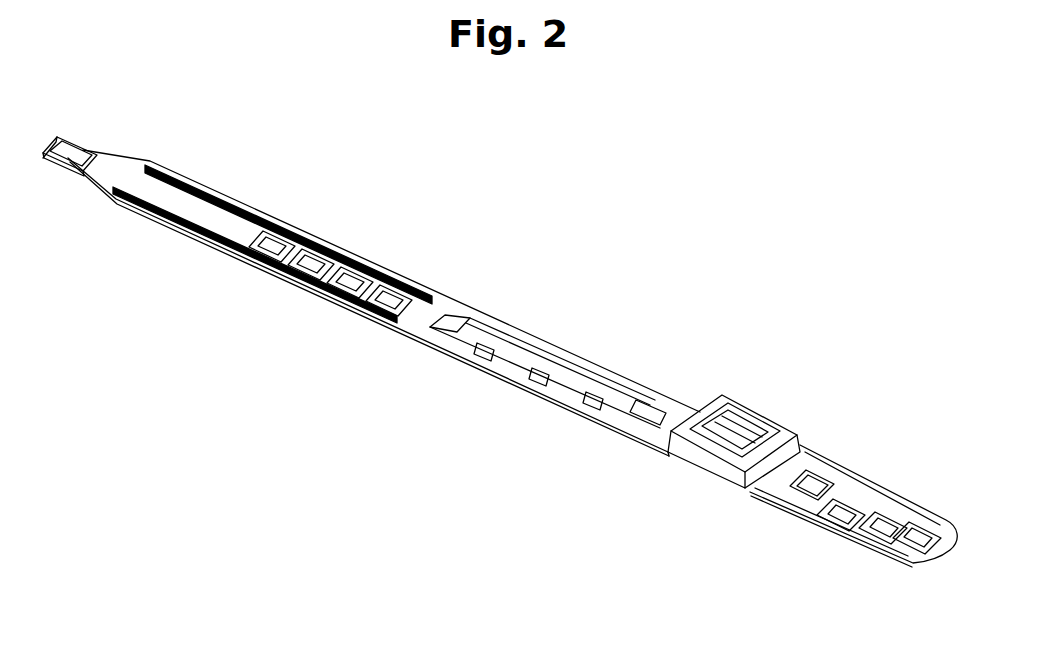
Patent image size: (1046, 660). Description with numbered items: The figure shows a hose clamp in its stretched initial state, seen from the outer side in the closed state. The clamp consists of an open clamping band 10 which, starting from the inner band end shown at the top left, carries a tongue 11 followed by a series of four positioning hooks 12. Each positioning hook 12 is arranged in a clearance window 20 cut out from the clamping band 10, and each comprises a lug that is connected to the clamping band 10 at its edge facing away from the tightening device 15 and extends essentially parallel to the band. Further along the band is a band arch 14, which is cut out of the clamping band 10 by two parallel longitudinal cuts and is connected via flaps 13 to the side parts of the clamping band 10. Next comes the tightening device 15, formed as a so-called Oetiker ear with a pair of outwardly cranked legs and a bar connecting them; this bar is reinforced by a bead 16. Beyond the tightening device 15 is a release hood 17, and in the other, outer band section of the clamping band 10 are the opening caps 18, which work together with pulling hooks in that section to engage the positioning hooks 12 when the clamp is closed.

The clamping band 10 is at (445, 305).
The tongue 11 is at (72, 133).
The positioning hooks 12 is at (349, 285).
The flaps 13 is at (538, 382).
The band arch 14 is at (580, 378).
The tightening device 15 is at (725, 401).
The bead 16 is at (748, 430).
The release hood 17 is at (813, 483).
The opening caps 18 is at (877, 512).
The clearance window 20 is at (329, 250).